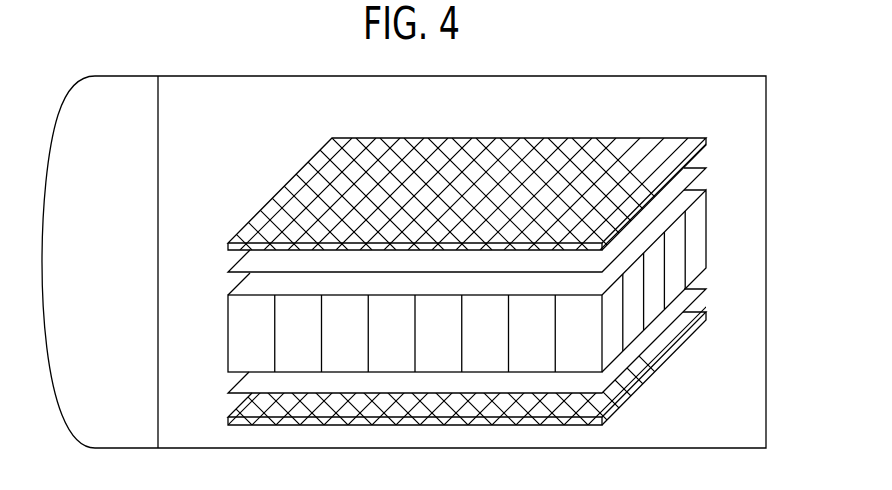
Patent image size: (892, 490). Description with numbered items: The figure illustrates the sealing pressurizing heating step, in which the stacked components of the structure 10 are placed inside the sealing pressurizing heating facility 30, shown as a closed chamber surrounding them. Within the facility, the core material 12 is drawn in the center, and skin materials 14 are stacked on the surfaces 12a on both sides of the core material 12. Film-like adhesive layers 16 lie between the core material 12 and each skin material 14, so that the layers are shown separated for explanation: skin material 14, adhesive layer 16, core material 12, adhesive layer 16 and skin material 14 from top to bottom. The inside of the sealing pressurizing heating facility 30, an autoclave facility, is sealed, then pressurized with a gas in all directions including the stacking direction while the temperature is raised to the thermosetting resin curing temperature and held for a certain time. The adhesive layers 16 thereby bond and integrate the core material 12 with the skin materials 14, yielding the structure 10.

The structure 10 is at (643, 122).
The core material 12 is at (531, 277).
The surfaces 12a is at (687, 189).
The skin materials 14 is at (684, 136).
The adhesive layers 16 is at (685, 166).
The sealing pressurizing heating facility 30 is at (766, 88).